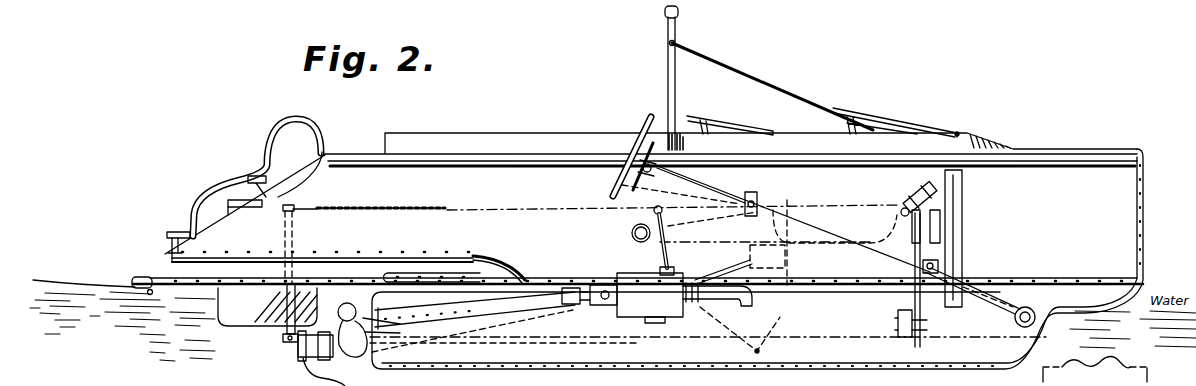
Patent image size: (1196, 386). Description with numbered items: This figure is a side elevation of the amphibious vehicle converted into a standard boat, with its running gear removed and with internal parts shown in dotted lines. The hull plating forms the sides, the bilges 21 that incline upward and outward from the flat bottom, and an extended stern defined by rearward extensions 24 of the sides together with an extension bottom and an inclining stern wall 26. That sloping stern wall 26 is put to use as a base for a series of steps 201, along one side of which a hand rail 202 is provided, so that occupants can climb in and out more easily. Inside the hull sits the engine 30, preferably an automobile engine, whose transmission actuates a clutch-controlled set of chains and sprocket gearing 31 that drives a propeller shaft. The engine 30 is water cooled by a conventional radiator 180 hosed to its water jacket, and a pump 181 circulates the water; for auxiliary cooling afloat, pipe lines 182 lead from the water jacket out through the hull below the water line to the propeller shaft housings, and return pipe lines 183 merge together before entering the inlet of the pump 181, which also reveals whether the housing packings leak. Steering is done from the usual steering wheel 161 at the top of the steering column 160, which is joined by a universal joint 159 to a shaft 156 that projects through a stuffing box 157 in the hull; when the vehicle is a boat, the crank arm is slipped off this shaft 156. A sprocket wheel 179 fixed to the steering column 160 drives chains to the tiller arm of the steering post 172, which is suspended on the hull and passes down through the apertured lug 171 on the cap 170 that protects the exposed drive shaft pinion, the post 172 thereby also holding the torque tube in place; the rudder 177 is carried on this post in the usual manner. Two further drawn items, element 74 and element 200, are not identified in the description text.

The bilges 21 is at (978, 333).
The extensions of the sides 24 is at (345, 219).
The inclining stern wall 26 is at (279, 186).
The engine 30 is at (867, 212).
The set of chains and sprocket gearing 31 is at (681, 272).
The hull plate 74 is at (339, 274).
The shaft 156 is at (997, 292).
The stuffing box 157 is at (1033, 310).
The universal joint 159 is at (939, 263).
The steering column 160 is at (784, 200).
The steering wheel 161 is at (649, 118).
The cap 170 is at (343, 372).
The lug 171 is at (298, 343).
The steering post 172 is at (292, 312).
The rudder 177 is at (232, 301).
The sprocket wheel 179 is at (757, 196).
The radiator 180 is at (963, 202).
The pump 181 is at (901, 313).
The pipe lines 182 is at (743, 303).
The pipe lines 183 is at (830, 318).
The ring 200 is at (609, 235).
The steps 201 is at (172, 233).
The hand rail 202 is at (280, 129).